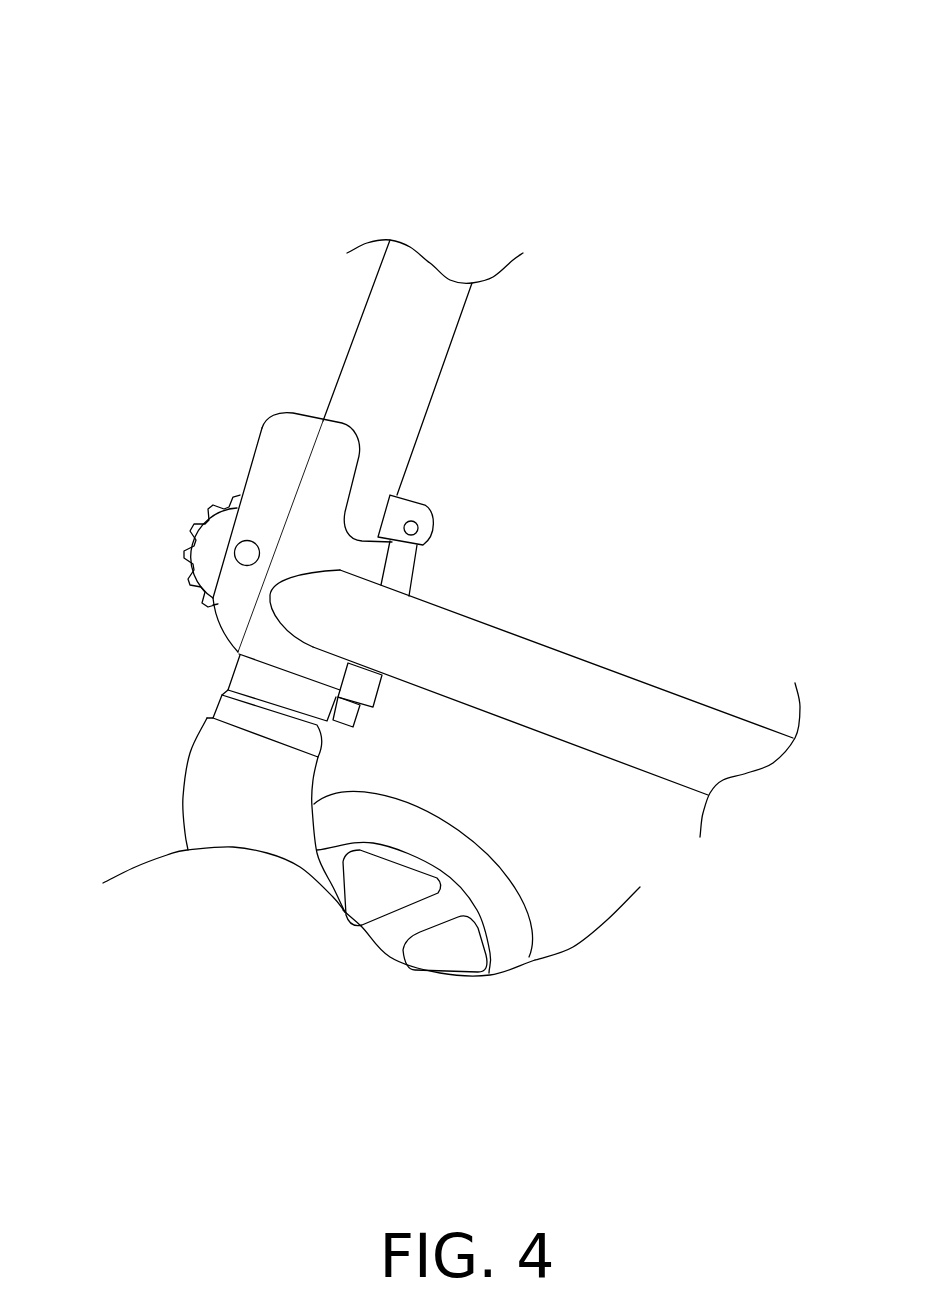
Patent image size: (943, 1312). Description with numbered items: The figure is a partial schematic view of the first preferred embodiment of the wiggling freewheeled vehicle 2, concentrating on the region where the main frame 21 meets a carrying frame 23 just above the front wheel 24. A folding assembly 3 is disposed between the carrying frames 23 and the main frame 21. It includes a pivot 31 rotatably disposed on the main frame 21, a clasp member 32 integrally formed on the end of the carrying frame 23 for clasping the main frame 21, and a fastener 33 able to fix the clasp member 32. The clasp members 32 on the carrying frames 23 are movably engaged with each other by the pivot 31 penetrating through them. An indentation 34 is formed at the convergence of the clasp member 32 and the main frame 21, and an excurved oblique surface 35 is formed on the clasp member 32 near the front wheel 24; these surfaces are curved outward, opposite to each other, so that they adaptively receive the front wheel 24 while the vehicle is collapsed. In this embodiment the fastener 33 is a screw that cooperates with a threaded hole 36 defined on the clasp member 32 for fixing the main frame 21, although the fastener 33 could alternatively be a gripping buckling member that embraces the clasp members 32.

The wiggling freewheeled vehicle 2 is at (177, 111).
The main frame 21 is at (422, 285).
The carrying frame 23 is at (622, 695).
The front wheel 24 is at (503, 948).
The folding assembly 3 is at (257, 417).
The pivot 31 is at (424, 500).
The clasp member 32 is at (342, 423).
The fastener 33 is at (193, 520).
The indentation 34 is at (420, 560).
The excurved oblique surface 35 is at (222, 627).
The threaded hole 36 is at (235, 556).